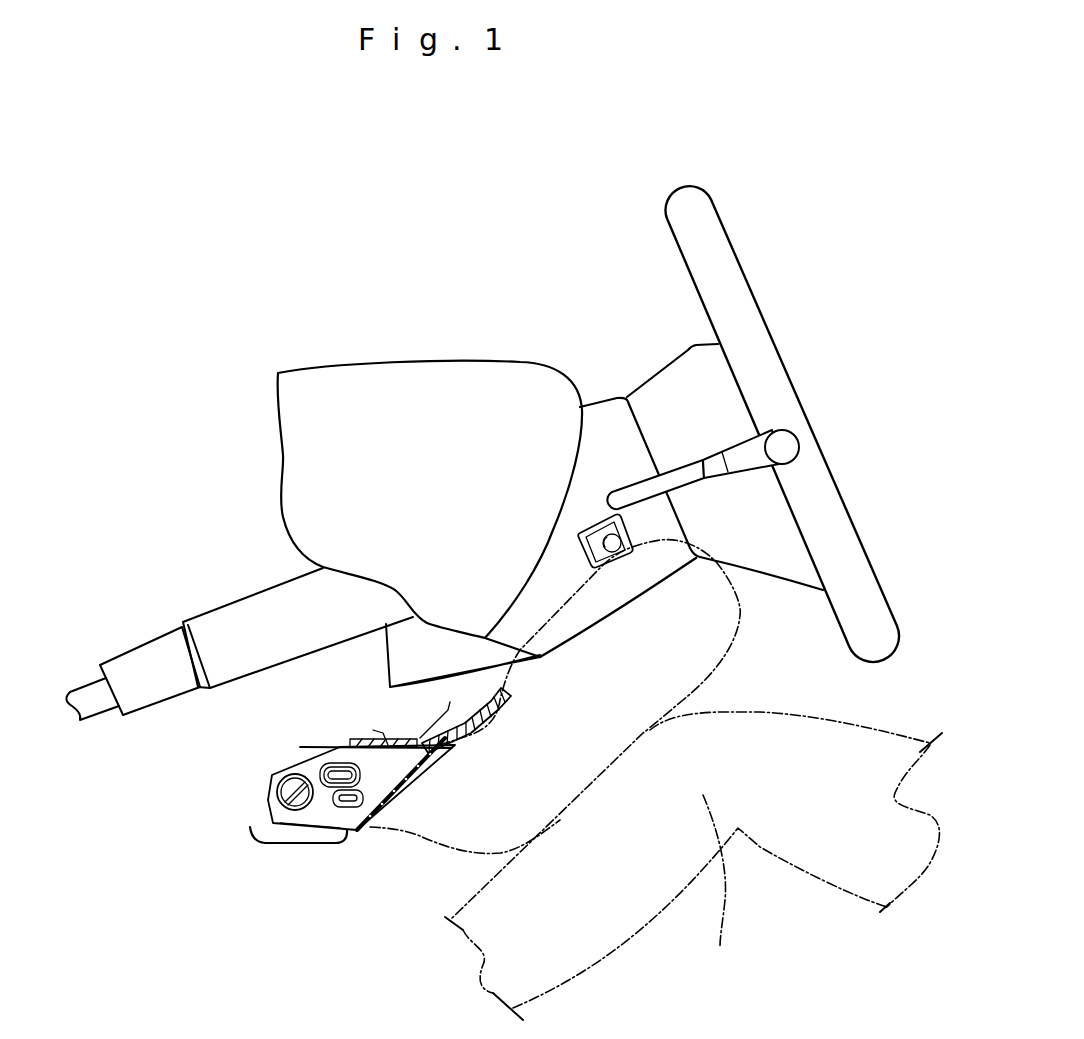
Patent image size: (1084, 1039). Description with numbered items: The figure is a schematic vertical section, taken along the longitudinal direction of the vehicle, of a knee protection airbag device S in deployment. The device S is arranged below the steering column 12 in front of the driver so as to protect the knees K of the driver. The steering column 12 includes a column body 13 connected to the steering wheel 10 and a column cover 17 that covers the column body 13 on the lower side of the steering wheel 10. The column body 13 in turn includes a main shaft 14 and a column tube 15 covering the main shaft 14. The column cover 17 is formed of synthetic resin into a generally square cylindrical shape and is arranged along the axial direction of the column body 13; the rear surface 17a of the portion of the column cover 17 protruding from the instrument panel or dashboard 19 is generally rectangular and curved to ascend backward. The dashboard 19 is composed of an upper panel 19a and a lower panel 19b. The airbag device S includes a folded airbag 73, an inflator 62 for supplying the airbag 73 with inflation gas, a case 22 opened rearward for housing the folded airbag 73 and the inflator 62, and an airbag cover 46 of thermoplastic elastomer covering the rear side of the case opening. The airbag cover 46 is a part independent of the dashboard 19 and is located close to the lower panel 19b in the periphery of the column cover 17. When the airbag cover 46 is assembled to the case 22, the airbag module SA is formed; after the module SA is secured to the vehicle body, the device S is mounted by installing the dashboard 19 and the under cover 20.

The steering wheel 10 is at (760, 218).
The steering column 12 is at (253, 572).
The column body 13 is at (207, 490).
The main shaft 14 is at (93, 687).
The column tube 15 is at (167, 658).
The column cover 17 is at (605, 407).
The rear surface 17a is at (638, 597).
The instrument panel (dashboard) 19 is at (410, 385).
The upper panel 19a is at (430, 509).
The lower panel 19b is at (490, 730).
The under cover 20 is at (297, 840).
The case 22 is at (327, 747).
The airbag cover 46 is at (417, 788).
The inflator 62 is at (263, 805).
The airbag 73 is at (353, 813).
The knee protection airbag device S is at (232, 870).
The airbag module SA is at (285, 762).
The knees K is at (717, 889).